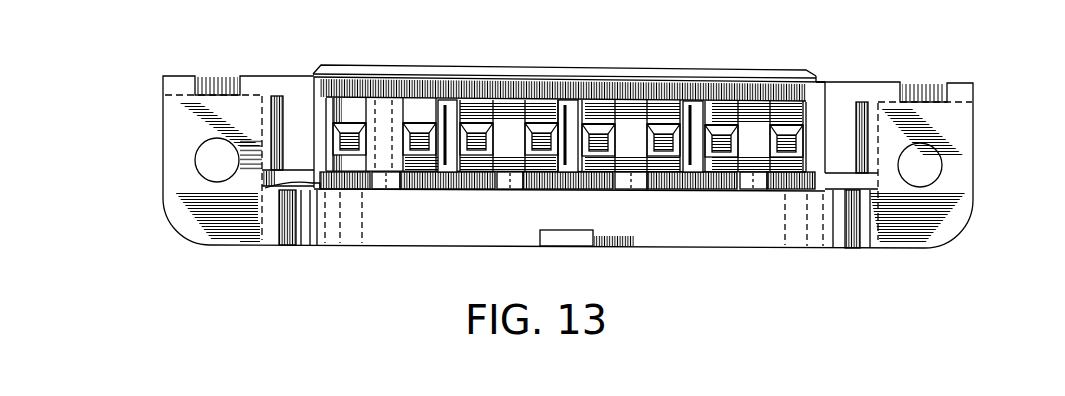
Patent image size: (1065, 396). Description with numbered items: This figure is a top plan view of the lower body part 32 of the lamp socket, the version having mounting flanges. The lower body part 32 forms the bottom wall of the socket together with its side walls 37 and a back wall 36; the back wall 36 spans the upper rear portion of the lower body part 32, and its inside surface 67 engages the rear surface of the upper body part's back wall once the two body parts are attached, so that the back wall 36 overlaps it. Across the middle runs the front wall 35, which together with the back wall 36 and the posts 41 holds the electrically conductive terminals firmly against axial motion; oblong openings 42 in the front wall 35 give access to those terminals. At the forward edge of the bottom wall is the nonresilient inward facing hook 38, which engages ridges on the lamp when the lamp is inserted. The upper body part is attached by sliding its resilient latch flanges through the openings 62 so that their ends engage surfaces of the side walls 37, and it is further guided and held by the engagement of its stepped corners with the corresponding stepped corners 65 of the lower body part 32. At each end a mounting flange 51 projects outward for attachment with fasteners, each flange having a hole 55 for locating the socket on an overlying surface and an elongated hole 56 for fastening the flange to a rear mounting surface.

The lower body part 32 is at (172, 232).
The front wall 35 is at (410, 183).
The back wall 36 is at (460, 85).
The side walls 37 is at (270, 225).
The nonresilient inward facing hook 38 is at (568, 238).
The posts 41 is at (354, 126).
The oblong openings 42 is at (515, 182).
The mounting flanges 51 is at (178, 121).
The holes 55 is at (218, 160).
The elongated holes 56 is at (222, 91).
The openings 62 is at (304, 134).
The stepped corners 65 is at (315, 77).
The inside surface 67 is at (641, 88).